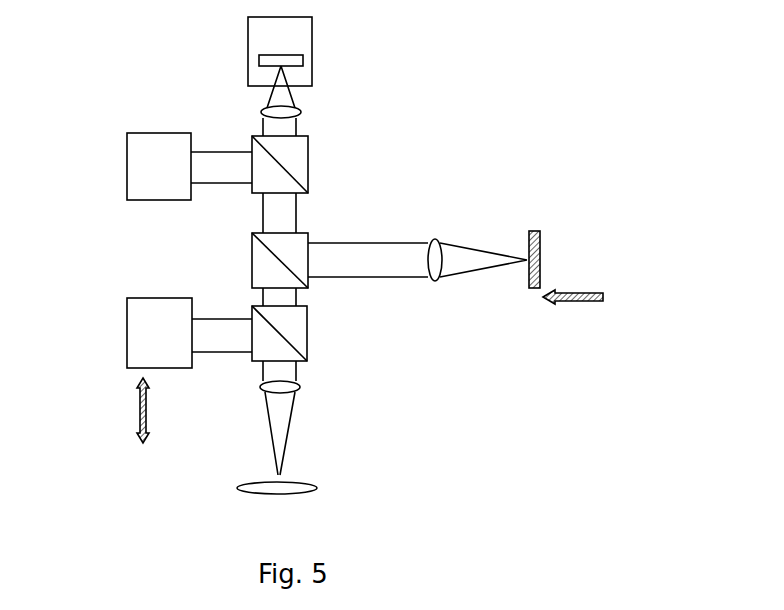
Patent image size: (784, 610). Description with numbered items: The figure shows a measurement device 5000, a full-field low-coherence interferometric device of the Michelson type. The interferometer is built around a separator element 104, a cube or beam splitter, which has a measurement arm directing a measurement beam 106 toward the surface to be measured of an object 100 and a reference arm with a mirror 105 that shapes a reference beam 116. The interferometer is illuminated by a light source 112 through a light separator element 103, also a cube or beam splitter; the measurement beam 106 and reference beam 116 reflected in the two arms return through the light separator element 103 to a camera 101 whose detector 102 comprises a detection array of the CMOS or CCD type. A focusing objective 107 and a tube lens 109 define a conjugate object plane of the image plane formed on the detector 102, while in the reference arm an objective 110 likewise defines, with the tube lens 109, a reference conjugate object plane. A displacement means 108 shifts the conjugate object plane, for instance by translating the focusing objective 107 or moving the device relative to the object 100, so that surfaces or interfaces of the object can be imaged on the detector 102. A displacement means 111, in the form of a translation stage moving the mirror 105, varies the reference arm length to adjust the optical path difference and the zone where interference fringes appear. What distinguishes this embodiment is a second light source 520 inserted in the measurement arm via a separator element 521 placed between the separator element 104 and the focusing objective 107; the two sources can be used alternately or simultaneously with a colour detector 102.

The measurement device 5000 is at (520, 132).
The camera 101 is at (312, 50).
The detector 102 is at (303, 60).
The tube lens 109 is at (262, 114).
The light separator element 103 is at (308, 160).
The light source 112 is at (127, 165).
The separator element 104 is at (252, 262).
The objective 110 is at (433, 283).
The reference beam 116 is at (473, 252).
The mirror 105 is at (540, 260).
The displacement means 111 is at (573, 302).
The separator element 521 is at (305, 335).
The second light source 520 is at (127, 333).
The focusing objective 107 is at (262, 385).
The measurement beam 106 is at (268, 432).
The object 100 is at (230, 487).
The displacement means 108 is at (138, 420).